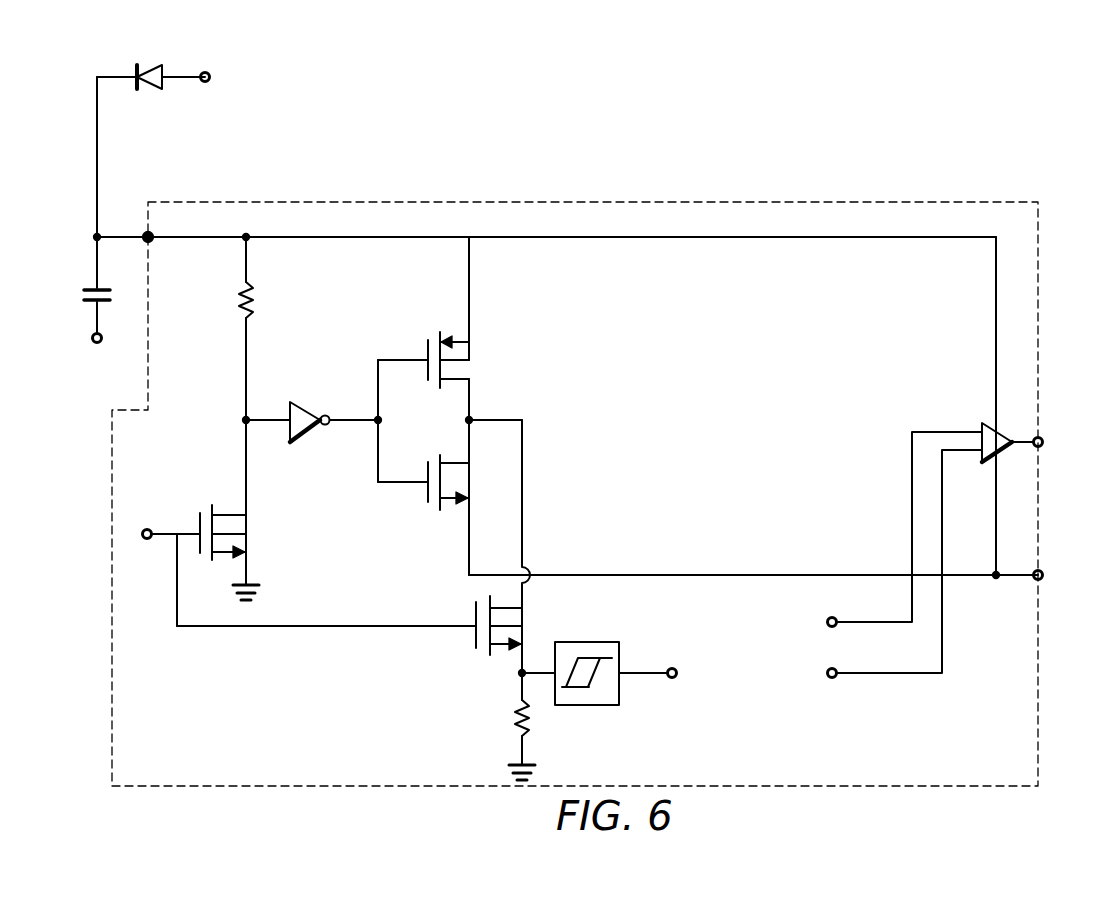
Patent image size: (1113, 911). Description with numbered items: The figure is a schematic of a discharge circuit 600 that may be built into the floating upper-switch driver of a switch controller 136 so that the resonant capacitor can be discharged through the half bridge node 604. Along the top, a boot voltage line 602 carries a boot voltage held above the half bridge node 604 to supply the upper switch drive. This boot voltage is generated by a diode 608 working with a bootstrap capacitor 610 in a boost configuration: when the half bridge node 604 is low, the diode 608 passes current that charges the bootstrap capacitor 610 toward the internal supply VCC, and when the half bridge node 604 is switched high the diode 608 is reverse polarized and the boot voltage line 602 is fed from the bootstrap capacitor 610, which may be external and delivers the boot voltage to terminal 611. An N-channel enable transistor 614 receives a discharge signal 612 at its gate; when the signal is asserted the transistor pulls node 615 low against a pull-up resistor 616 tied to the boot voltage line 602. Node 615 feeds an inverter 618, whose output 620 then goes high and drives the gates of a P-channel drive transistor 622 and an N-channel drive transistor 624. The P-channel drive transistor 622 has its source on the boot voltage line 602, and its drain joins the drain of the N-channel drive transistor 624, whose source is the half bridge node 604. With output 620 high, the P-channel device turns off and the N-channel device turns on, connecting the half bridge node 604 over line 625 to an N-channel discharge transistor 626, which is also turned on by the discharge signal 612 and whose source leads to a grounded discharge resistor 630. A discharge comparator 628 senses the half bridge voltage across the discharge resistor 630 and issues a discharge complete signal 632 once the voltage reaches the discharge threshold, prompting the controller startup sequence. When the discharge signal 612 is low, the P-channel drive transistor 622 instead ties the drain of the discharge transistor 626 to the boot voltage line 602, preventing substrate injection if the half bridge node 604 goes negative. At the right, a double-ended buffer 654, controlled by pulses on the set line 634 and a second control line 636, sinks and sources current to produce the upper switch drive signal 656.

The discharge circuit 600 is at (1097, 108).
The switch controller 136 is at (972, 204).
The boot voltage line 602 is at (546, 236).
The half bridge node 604 is at (96, 372).
The diode 608 is at (134, 66).
The bootstrap capacitor 610 is at (92, 288).
The terminal 611 is at (144, 233).
The discharge signal 612 is at (147, 528).
The N-channel enable transistor 614 is at (226, 512).
The node 615 is at (246, 396).
The pull-up resistor 616 is at (254, 300).
The inverter 618 is at (308, 410).
The output 620 is at (352, 424).
The P-channel drive transistor 622 is at (426, 350).
The N-channel drive transistor 624 is at (426, 499).
The line 625 is at (507, 420).
The N-channel discharge transistor 626 is at (475, 611).
The discharge comparator 628 is at (604, 642).
The discharge resistor 630 is at (531, 724).
The discharge complete signal 632 is at (648, 682).
The set line 634 is at (861, 620).
The input terminal 636 is at (861, 671).
The double-ended buffer 654 is at (1003, 451).
The upper switch drive signal 656 is at (1026, 436).